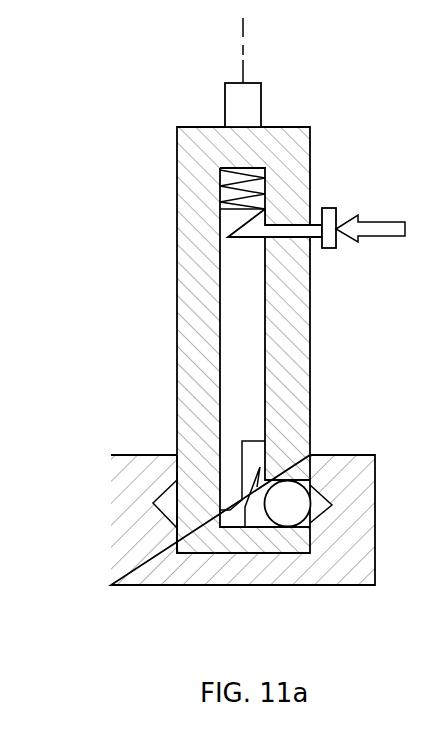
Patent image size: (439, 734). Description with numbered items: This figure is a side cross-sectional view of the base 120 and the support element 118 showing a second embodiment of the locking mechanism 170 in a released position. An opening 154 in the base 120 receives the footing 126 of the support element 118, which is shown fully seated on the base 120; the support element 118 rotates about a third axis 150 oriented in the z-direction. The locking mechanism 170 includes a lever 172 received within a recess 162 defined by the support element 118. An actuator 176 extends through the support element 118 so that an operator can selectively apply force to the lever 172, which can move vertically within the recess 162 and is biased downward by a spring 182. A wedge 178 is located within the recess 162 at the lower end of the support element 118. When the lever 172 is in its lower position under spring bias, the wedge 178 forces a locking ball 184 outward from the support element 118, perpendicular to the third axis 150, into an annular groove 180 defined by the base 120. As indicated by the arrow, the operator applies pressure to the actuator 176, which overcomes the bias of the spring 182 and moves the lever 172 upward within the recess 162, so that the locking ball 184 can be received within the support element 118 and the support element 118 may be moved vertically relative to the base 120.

The support element 118 is at (175, 327).
The base 120 is at (95, 482).
The footing 126 is at (177, 538).
The third axis 150 is at (248, 31).
The opening 154 is at (178, 448).
The recess 162 is at (218, 382).
The locking mechanism 170 is at (352, 205).
The lever 172 is at (235, 280).
The actuator 176 is at (327, 249).
The wedge 178 is at (263, 480).
The annular groove 180 is at (320, 510).
The spring 182 is at (225, 182).
The locking ball 184 is at (297, 497).